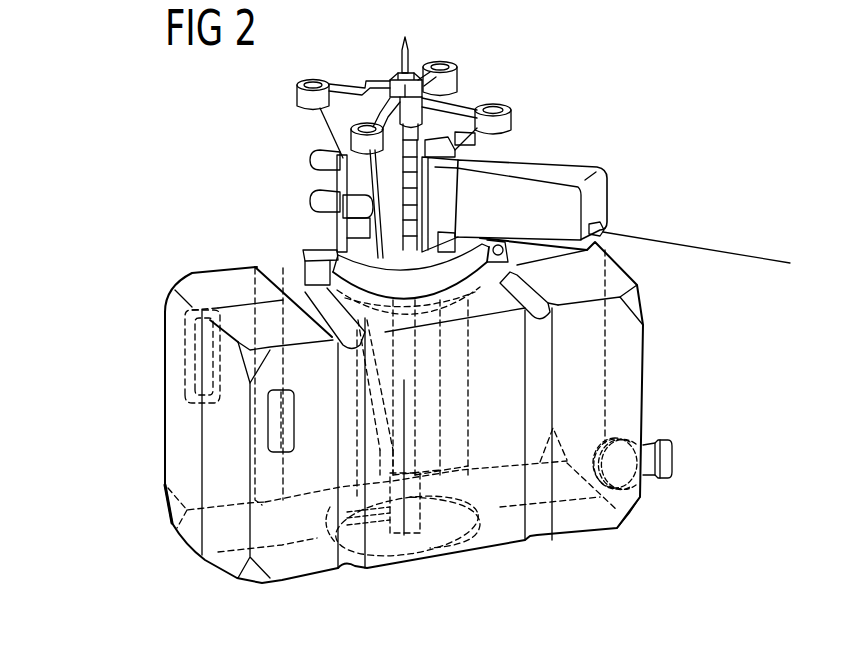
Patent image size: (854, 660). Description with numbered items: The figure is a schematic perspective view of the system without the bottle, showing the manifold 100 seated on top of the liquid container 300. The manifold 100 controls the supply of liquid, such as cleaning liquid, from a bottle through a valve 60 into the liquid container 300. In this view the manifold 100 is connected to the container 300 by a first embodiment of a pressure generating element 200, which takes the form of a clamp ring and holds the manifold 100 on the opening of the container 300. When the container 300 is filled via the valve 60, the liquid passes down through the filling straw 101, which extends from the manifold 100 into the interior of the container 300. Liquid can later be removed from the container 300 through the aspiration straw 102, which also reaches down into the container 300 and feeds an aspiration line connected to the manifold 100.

The manifold 100 is at (459, 102).
The valve 60 is at (563, 167).
The pressure generating element 200 is at (343, 256).
The liquid container 300 is at (635, 362).
The filling straw 101 is at (410, 497).
The aspiration straw 102 is at (385, 450).